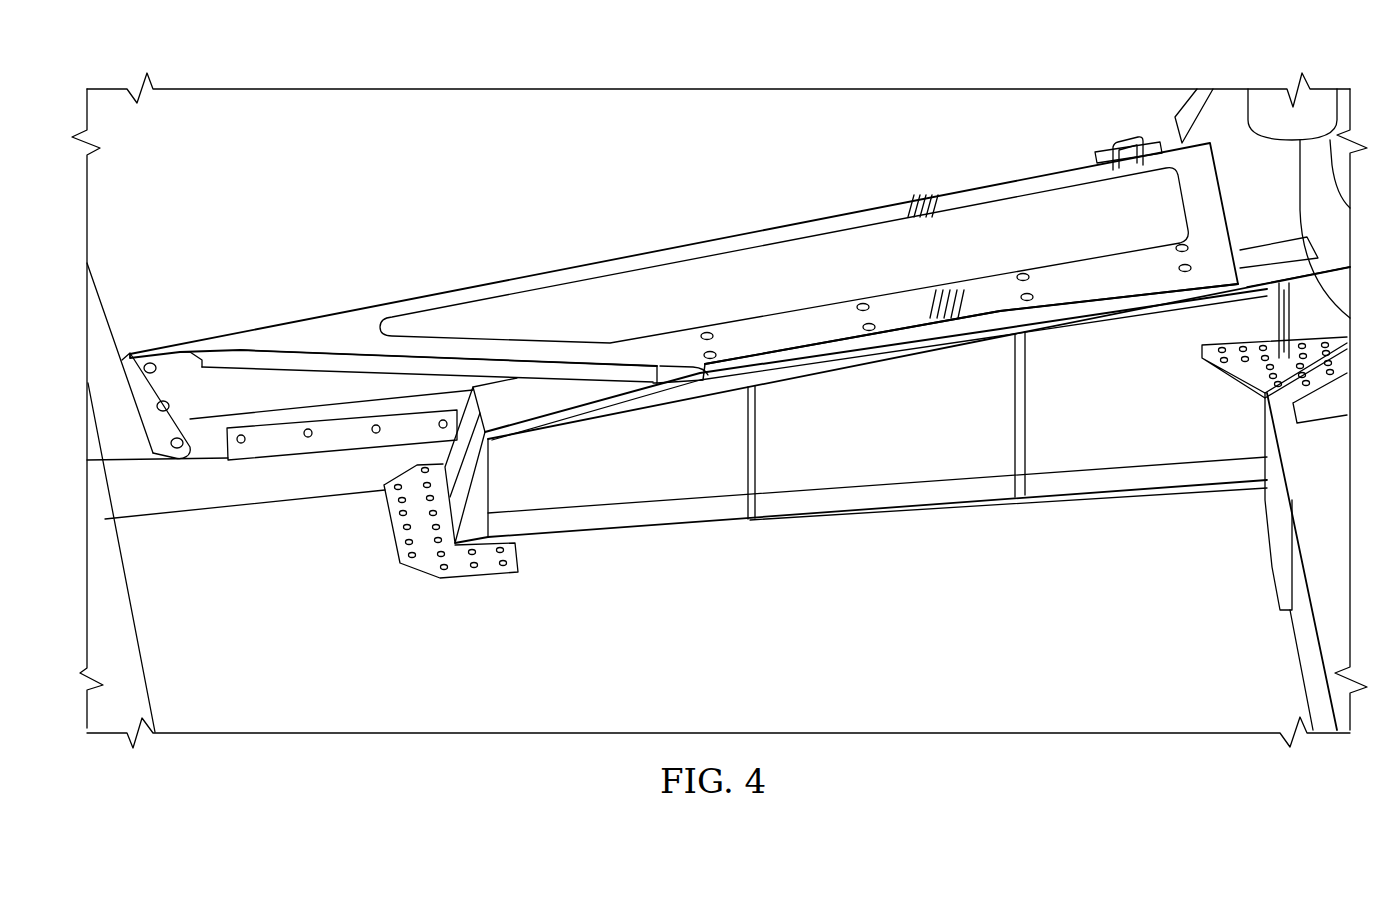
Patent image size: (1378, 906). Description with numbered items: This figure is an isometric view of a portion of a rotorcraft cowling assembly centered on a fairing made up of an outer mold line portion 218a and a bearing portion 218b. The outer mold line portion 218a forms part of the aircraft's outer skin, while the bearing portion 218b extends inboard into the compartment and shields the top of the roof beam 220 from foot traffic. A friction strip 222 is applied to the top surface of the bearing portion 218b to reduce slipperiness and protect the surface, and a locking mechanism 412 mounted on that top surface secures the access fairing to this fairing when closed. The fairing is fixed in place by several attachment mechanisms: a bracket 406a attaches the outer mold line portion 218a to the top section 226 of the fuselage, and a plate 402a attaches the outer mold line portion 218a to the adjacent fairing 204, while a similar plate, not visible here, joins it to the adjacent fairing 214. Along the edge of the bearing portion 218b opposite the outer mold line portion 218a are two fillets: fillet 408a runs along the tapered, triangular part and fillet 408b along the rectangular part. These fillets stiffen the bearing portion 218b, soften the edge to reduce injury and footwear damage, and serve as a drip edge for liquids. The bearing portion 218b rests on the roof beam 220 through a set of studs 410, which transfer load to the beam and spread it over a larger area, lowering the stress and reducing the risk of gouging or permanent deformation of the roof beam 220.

The fairing 204 is at (103, 360).
The fairing 214 is at (1225, 108).
The outer mold line portion 218a is at (260, 360).
The bearing portion 218b is at (350, 327).
The roof beam 220 is at (1113, 440).
The friction strip 222 is at (560, 300).
The top section of the fuselage 226 is at (393, 675).
The plate 402a is at (165, 383).
The bracket 406a is at (258, 445).
The fillet 408a is at (347, 362).
The fillet 408b is at (892, 338).
The studs 410 is at (689, 360).
The locking mechanism 412 is at (1110, 147).